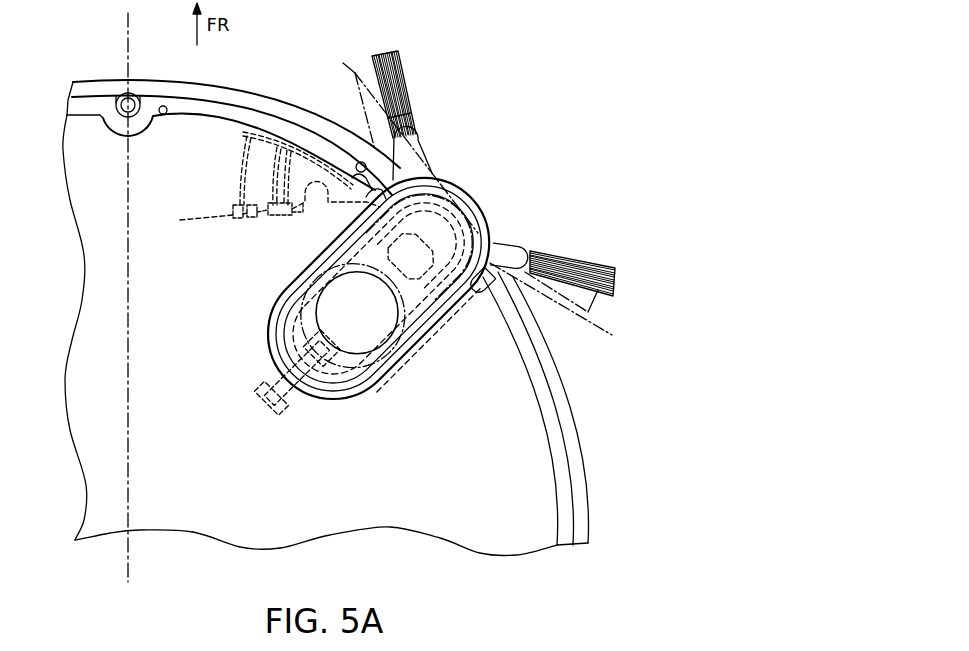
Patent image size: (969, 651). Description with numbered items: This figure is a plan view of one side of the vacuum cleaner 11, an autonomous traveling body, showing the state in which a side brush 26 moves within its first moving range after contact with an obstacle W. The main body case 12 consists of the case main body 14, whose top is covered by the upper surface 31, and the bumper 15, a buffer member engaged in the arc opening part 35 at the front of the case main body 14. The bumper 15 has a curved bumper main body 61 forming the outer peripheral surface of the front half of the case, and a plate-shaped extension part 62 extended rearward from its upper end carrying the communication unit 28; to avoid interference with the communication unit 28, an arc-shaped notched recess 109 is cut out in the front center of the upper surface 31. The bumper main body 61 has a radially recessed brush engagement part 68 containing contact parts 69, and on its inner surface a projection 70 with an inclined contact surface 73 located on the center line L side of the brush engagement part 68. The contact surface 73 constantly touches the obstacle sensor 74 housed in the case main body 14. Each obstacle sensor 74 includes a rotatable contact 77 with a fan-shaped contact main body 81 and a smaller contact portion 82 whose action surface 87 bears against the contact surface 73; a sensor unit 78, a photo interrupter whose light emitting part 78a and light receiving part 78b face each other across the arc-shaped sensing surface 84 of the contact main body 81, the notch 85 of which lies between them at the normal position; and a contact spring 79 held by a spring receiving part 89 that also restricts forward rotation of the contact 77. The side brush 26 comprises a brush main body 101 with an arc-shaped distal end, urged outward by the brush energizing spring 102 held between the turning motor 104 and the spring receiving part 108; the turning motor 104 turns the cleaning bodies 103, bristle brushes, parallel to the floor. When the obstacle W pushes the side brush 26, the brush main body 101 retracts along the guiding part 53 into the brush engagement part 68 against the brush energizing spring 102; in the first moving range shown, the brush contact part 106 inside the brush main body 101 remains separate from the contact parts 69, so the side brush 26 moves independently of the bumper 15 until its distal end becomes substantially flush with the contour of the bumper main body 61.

The vacuum cleaner 11 is at (252, 545).
The main body case 12 is at (88, 233).
The case main body 14 is at (394, 522).
The bumper 15 is at (571, 407).
The side brush 26 is at (493, 146).
The communication unit 28 is at (122, 96).
The upper surface 31 is at (195, 525).
The arc opening part 35 is at (163, 113).
The guiding part 53 is at (397, 373).
The bumper main body 61 is at (155, 82).
The extension part 62 is at (84, 103).
The brush engagement part 68 is at (480, 288).
The contact part 69 is at (366, 195).
The projection 70 is at (368, 142).
The contact surface 73 is at (380, 125).
The obstacle sensor 74 is at (298, 128).
The contact 77 is at (249, 133).
The sensor unit 78 is at (282, 262).
The light emitting part 78a is at (256, 218).
The light receiving part 78b is at (242, 218).
The contact spring 79 is at (287, 150).
The contact main body 81 is at (273, 150).
The contact portion 82 is at (358, 163).
The sensing surface 84 is at (243, 153).
The notch 85 is at (233, 213).
The action surface 87 is at (392, 150).
The spring receiving part 89 is at (289, 212).
The brush main body 101 is at (488, 212).
The brush energizing spring 102 is at (297, 402).
The cleaning body 103 is at (403, 62).
The turning motor 104 is at (395, 348).
The brush contact part 106 is at (458, 200).
The spring receiving part 108 is at (270, 405).
The notched recess 109 is at (110, 119).
The center line L is at (133, 30).
The obstacle W is at (611, 333).